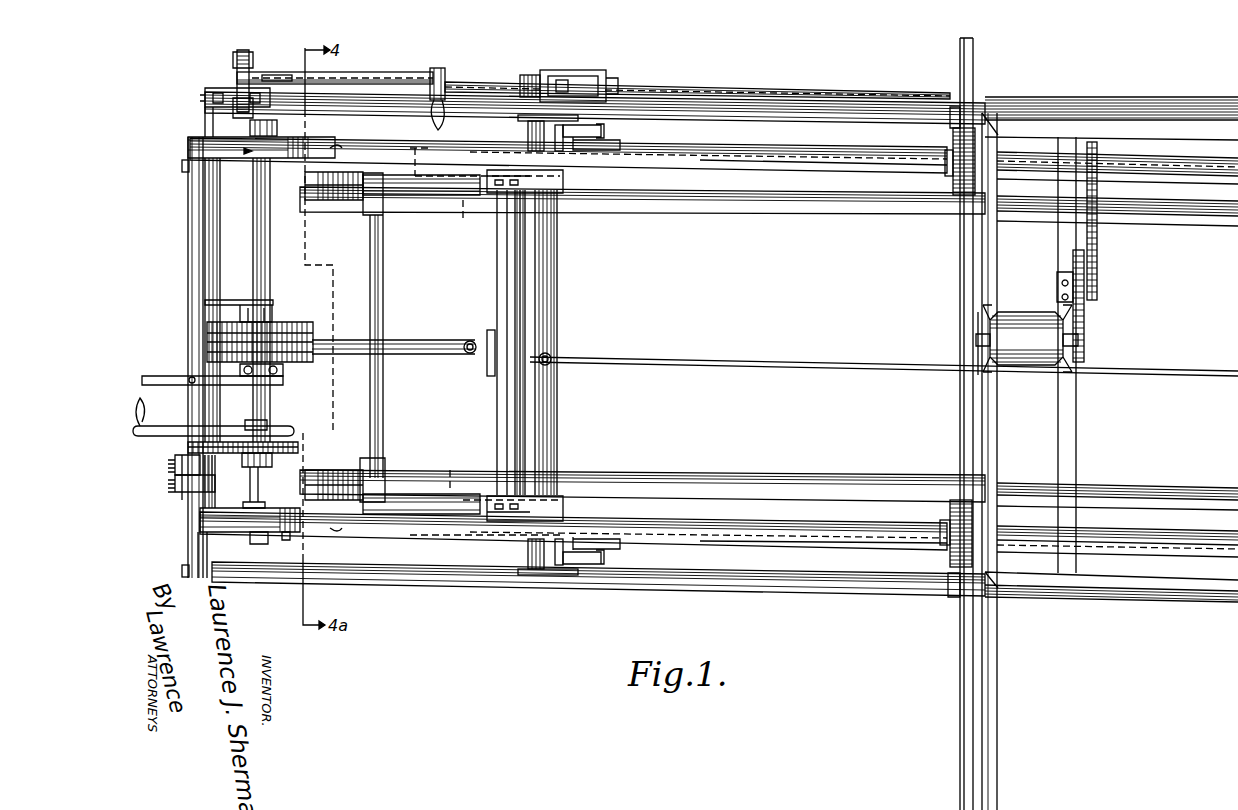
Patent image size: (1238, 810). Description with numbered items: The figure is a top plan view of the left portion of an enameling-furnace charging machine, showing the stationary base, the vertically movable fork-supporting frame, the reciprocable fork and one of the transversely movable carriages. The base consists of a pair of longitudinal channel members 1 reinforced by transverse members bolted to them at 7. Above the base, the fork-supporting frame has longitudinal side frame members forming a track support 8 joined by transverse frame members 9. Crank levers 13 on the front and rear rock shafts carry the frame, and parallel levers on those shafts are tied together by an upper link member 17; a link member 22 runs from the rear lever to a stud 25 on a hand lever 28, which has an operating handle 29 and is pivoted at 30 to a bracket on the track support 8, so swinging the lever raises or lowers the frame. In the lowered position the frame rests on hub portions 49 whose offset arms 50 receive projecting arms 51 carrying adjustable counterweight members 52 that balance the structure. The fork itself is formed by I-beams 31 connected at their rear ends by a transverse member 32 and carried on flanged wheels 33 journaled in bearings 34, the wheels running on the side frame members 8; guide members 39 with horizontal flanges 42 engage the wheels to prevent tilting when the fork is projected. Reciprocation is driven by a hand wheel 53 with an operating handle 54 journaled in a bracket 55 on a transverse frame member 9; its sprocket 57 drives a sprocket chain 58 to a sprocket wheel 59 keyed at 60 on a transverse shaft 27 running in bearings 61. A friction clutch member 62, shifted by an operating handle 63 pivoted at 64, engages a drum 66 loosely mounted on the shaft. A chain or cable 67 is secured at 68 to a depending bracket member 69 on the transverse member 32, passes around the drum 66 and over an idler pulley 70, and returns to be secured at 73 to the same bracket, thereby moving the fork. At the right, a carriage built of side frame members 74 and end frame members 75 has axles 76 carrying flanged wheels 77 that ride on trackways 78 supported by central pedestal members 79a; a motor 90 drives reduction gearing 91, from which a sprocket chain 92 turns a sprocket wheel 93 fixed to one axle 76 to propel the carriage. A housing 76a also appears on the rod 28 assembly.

The longitudinal channel members 1 is at (886, 96).
The bolts 7 is at (775, 586).
The track support 8 is at (762, 152).
The transverse frame members 9 is at (188, 276).
The crank lever 13 is at (602, 130).
The upper link member 17 is at (843, 92).
The link member 22 is at (455, 68).
The stud 25 is at (262, 72).
The transverse shaft 27 is at (270, 403).
The hand lever 28 is at (376, 74).
The operating handle 29 is at (432, 118).
The pivot 30 is at (235, 88).
The I-beams 31 is at (702, 214).
The transverse member 32 is at (498, 294).
The flanged wheels 33 is at (430, 200).
The bearings 34 is at (368, 212).
The guide members 39 is at (830, 155).
The horizontal flanges 42 is at (888, 154).
The hub portions 49 is at (528, 131).
The offset arms 50 is at (486, 182).
The projecting arms 51 is at (466, 210).
The counterweight members 52 is at (318, 204).
The hand wheel 53 is at (160, 438).
The operating handle 54 is at (140, 414).
The bracket 55 is at (180, 494).
The sprocket 57 is at (175, 464).
The sprocket chain 58 is at (246, 428).
The sprocket wheel 59 is at (300, 444).
The key 60 is at (250, 478).
The bearings 61 is at (292, 150).
The friction clutch member 62 is at (284, 374).
The operating handle 63 is at (166, 376).
The pivot 64 is at (190, 386).
The drum 66 is at (300, 328).
The chain or cable 67 is at (416, 340).
The securing point 68 is at (470, 341).
The depending bracket member 69 is at (486, 358).
The idler pulley 70 is at (612, 146).
The securing point 73 is at (552, 356).
The side frame members 74 is at (1200, 130).
The end frame members 75 is at (985, 272).
The axles 76 is at (1200, 172).
The housing 76a is at (600, 86).
The flanged wheels 77 is at (950, 185).
The trackways 78 is at (975, 332).
The central pedestal members 79a is at (970, 108).
The motor 90 is at (1028, 362).
The reduction gearing 91 is at (1084, 300).
The sprocket chain 92 is at (1098, 238).
The sprocket wheel 93 is at (1098, 142).